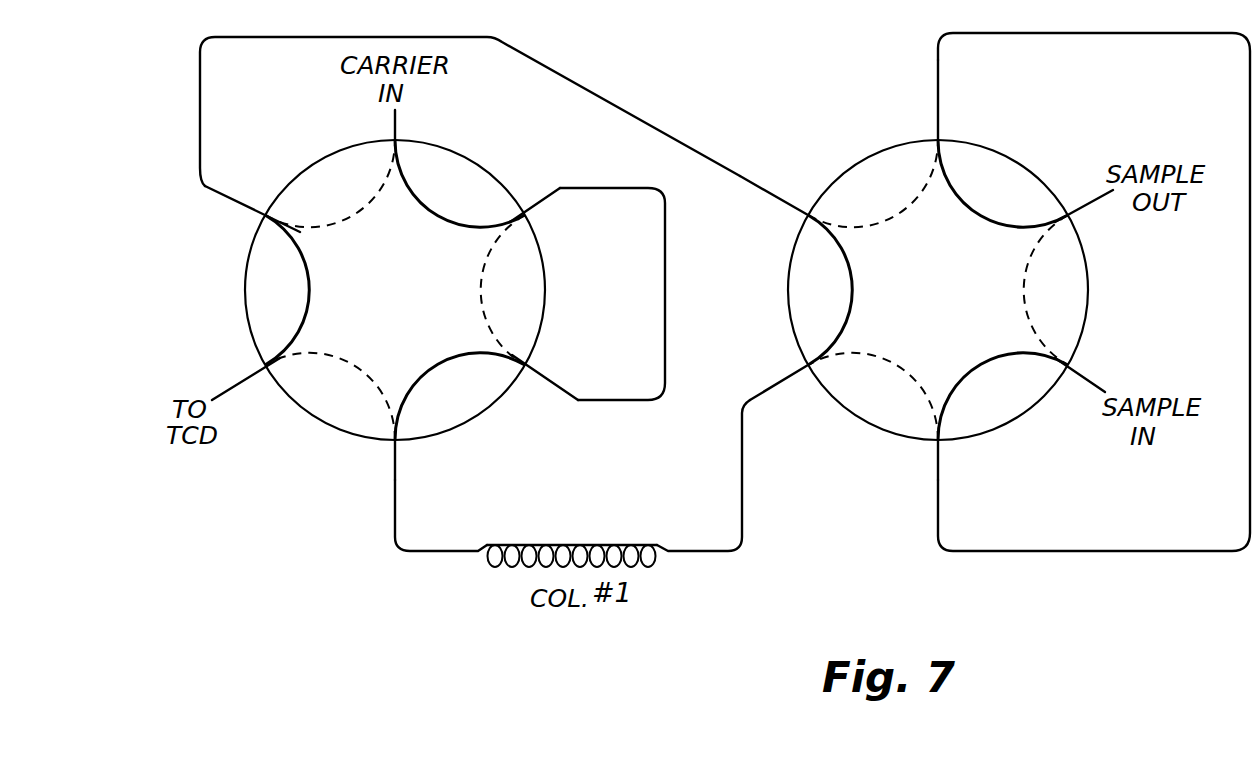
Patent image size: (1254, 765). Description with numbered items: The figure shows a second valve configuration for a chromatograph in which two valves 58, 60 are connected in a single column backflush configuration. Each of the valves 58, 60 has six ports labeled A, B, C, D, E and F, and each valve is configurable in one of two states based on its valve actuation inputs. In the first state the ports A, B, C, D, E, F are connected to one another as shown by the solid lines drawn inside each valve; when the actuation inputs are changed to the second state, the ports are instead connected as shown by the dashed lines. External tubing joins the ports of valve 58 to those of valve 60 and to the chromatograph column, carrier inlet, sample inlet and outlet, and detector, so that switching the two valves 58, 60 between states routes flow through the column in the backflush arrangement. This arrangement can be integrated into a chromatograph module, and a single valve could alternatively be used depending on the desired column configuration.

The valve 58 is at (466, 158).
The valve 60 is at (879, 151).
The port A is at (397, 122).
The port B is at (548, 204).
The port C is at (543, 377).
The port D is at (396, 473).
The port E is at (244, 383).
The port F is at (212, 193).